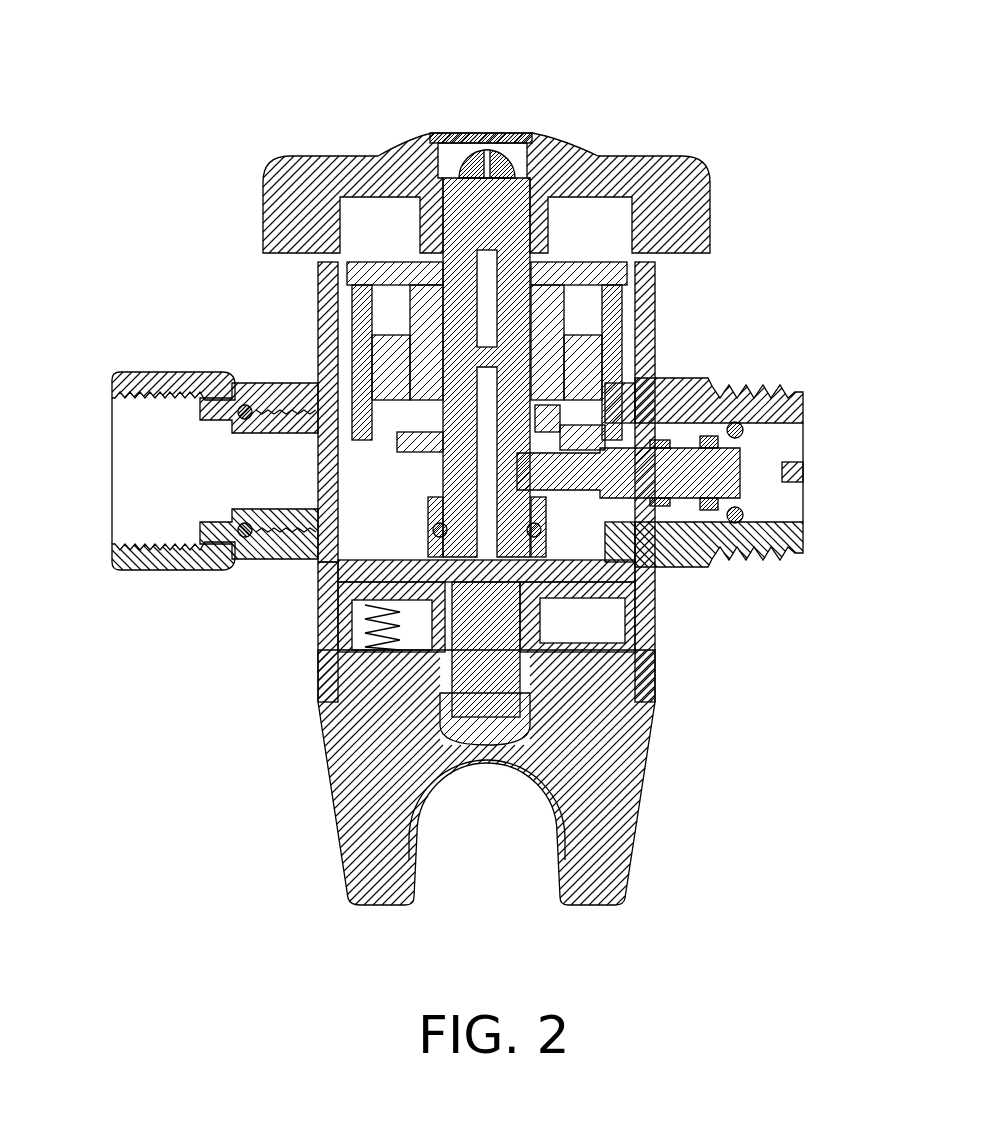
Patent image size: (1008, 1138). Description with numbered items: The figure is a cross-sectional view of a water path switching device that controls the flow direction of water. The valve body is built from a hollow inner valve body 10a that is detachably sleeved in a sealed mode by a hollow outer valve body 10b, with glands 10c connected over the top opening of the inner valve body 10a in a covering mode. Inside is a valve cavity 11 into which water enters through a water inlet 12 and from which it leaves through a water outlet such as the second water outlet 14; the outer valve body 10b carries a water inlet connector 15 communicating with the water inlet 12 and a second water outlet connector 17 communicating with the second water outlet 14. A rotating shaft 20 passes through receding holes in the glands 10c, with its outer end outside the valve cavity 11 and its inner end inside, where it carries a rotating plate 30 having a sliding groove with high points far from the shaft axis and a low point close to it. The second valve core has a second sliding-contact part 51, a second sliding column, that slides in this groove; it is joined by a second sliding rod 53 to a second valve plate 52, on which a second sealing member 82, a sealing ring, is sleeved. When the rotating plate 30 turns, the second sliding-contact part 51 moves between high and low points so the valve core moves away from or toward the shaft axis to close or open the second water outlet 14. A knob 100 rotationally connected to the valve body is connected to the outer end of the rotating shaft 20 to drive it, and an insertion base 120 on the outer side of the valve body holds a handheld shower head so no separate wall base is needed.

The knob 100 is at (303, 197).
The inner valve body 10a is at (345, 360).
The outer valve body 10b is at (323, 590).
The glands 10c is at (348, 298).
The valve cavity 11 is at (400, 493).
The water inlet 12 is at (275, 412).
The second water outlet 14 is at (743, 513).
The water inlet connector 15 is at (245, 400).
The second water outlet connector 17 is at (737, 395).
The rotating shaft 20 is at (603, 300).
The rotating plate 30 is at (570, 433).
The second sliding-contact part 51 is at (553, 420).
The second valve plate 52 is at (750, 470).
The second sliding rod 53 is at (635, 485).
The second sealing member 82 is at (790, 396).
The insertion base 120 is at (340, 735).